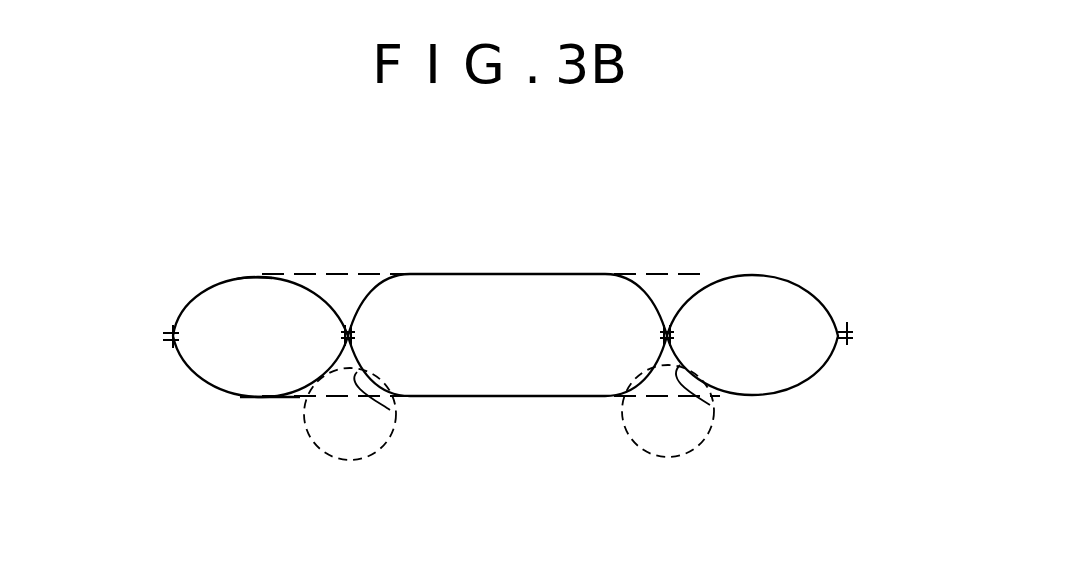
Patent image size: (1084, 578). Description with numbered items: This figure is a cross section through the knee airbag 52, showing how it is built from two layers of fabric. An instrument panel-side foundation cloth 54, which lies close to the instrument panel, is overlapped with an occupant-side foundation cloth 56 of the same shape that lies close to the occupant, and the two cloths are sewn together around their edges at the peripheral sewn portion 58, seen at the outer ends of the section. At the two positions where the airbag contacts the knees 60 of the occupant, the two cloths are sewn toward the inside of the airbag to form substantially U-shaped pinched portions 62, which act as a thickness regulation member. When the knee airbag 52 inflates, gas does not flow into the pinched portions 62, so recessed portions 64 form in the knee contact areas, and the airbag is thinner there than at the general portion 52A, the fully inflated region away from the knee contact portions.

The knee airbag 52 is at (583, 252).
The general portion 52A is at (253, 278).
The instrument panel-side foundation cloth 54 is at (227, 280).
The occupant-side foundation cloth 56 is at (238, 398).
The peripheral sewn portion 58 is at (170, 345).
The knees 60 is at (337, 458).
The pinched portions 62 is at (350, 322).
The recessed portions 64 is at (390, 410).